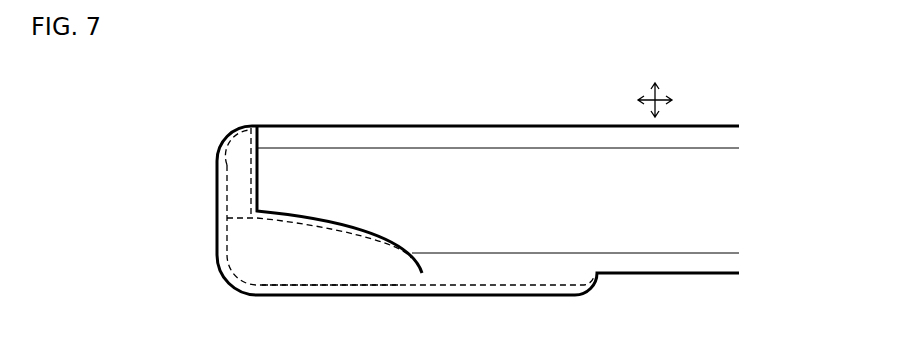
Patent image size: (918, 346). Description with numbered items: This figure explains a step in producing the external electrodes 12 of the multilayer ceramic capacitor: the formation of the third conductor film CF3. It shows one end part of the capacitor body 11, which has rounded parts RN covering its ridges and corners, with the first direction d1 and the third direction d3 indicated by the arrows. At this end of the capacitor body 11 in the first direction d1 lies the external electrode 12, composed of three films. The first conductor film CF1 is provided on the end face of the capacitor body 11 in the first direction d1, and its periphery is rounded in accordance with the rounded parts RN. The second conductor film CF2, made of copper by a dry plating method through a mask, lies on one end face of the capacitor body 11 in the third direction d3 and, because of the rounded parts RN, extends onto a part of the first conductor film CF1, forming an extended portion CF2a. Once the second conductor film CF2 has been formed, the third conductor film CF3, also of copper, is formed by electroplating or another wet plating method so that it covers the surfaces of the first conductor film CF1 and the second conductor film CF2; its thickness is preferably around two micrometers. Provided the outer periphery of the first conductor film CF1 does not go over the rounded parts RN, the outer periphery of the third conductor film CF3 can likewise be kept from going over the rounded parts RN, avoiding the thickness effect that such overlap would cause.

The capacitor body 11 is at (497, 126).
The external electrode 12 is at (231, 289).
The rounded parts RN is at (243, 158).
The first conductor film CF1 is at (215, 168).
The second conductor film CF2 is at (452, 287).
The extended portion CF2a is at (318, 249).
The third conductor film CF3 is at (217, 220).
The first direction d1 is at (666, 101).
The third direction d3 is at (655, 91).